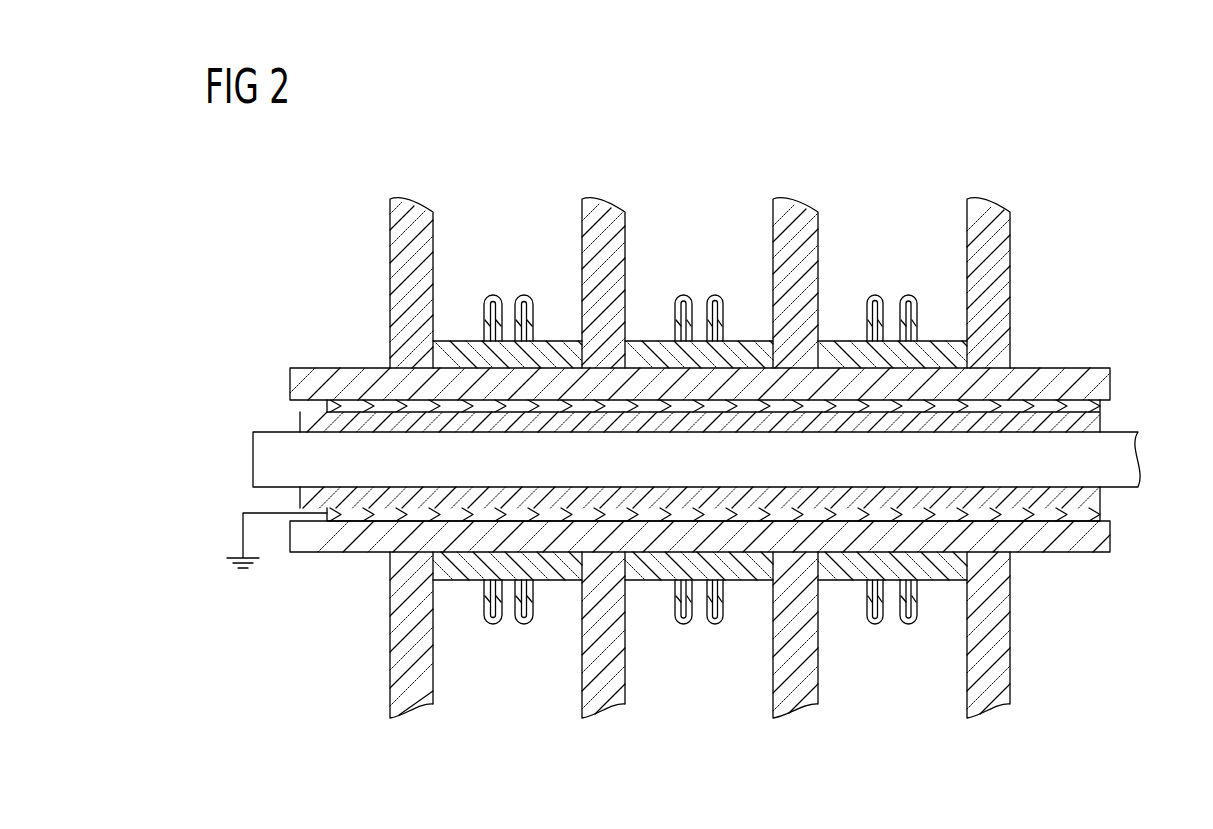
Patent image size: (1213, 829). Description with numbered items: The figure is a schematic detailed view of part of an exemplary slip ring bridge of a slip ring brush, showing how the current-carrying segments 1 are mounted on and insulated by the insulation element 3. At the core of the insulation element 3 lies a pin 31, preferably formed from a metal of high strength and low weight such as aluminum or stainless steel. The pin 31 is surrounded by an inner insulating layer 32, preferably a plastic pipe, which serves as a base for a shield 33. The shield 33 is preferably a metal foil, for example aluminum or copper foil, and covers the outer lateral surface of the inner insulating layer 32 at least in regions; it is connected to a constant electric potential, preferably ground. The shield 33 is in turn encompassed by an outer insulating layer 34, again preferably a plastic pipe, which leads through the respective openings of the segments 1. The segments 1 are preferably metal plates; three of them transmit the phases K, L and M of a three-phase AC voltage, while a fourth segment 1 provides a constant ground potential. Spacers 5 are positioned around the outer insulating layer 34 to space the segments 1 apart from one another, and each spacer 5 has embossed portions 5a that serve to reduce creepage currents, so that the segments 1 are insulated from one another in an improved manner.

The segment 1 is at (408, 249).
The insulation element 3 is at (225, 367).
The spacer 5 is at (665, 341).
The embossed portion 5a is at (892, 291).
The pin 31 is at (275, 441).
The inner insulating layer 32 is at (1104, 503).
The shield 33 is at (1100, 410).
The outer insulating layer 34 is at (1077, 387).
The phase K is at (605, 187).
The phase L is at (797, 187).
The phase M is at (990, 187).